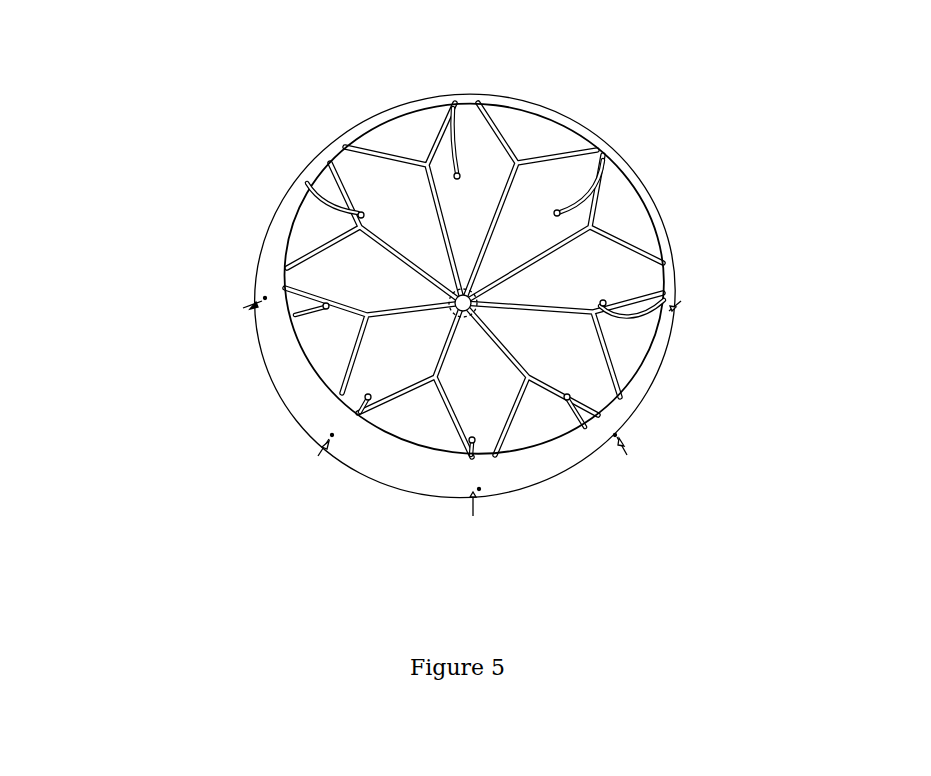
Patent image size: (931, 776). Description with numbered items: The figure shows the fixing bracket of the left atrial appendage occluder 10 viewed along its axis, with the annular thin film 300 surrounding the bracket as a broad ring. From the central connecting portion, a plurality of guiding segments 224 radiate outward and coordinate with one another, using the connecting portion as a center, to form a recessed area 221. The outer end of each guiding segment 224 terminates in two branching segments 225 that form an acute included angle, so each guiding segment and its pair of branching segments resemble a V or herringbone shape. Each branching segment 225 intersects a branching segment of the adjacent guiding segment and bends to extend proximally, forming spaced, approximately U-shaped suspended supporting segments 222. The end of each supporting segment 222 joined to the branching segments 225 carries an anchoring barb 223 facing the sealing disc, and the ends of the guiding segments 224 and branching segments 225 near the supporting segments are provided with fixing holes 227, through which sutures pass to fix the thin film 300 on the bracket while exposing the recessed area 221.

The left atrial appendage occluder 10 is at (220, 128).
The thin film 300 is at (282, 373).
The recessed area 221 is at (472, 210).
The suspended supporting segment 222 is at (340, 197).
The anchoring barb 223 is at (253, 304).
The guiding segment 224 is at (636, 303).
The branching segment 225 is at (633, 238).
The fixing hole 227 is at (477, 490).